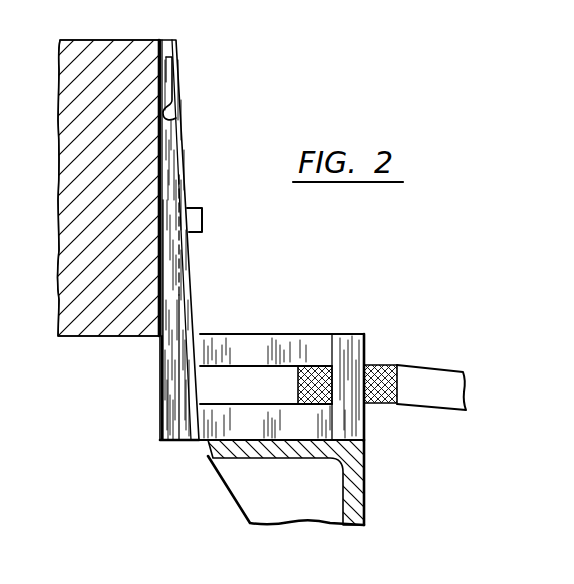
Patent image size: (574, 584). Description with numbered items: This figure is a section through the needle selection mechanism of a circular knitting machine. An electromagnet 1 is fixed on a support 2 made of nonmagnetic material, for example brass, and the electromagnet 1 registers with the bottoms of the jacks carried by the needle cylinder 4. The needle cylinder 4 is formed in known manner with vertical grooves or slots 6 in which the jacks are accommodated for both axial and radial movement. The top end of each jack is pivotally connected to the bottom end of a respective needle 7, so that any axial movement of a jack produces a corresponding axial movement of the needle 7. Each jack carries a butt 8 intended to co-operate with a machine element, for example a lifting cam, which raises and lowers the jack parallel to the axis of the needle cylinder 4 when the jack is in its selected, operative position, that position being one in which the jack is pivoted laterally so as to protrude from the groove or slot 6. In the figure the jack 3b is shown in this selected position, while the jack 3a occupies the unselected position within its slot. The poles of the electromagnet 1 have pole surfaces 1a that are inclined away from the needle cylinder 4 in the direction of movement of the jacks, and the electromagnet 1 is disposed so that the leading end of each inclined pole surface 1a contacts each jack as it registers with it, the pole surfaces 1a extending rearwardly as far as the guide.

The electromagnet 1 is at (377, 352).
The pole surfaces 1a is at (213, 423).
The support 2 is at (365, 476).
The jack 3a is at (162, 408).
The jack 3b is at (183, 262).
The needle cylinder 4 is at (60, 191).
The vertical grooves or slots 6 is at (165, 300).
The needle 7 is at (174, 71).
The butt 8 is at (204, 216).